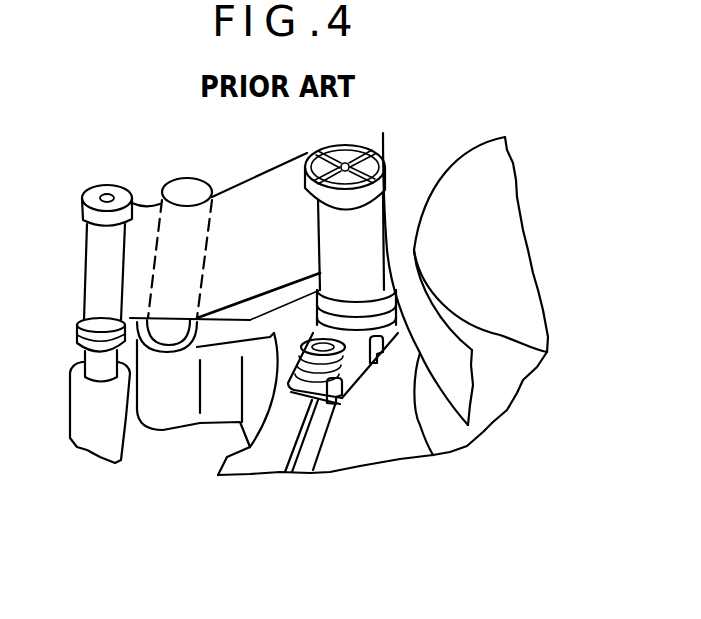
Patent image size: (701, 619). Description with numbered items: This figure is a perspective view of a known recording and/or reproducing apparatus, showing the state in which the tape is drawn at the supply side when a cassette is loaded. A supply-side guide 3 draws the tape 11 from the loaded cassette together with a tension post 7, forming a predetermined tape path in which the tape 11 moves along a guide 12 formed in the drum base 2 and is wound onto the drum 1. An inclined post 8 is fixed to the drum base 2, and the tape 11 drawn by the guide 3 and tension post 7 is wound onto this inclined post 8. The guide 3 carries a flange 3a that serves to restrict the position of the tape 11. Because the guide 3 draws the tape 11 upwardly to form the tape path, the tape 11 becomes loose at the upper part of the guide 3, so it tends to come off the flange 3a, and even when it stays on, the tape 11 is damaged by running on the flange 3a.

The drum 1 is at (515, 267).
The drum base 2 is at (220, 415).
The supply-side guide 3 is at (373, 233).
The flange 3a is at (380, 185).
The tension post 7 is at (90, 259).
The inclined post 8 is at (172, 340).
The tape 11 is at (147, 210).
The guide 12 is at (317, 435).